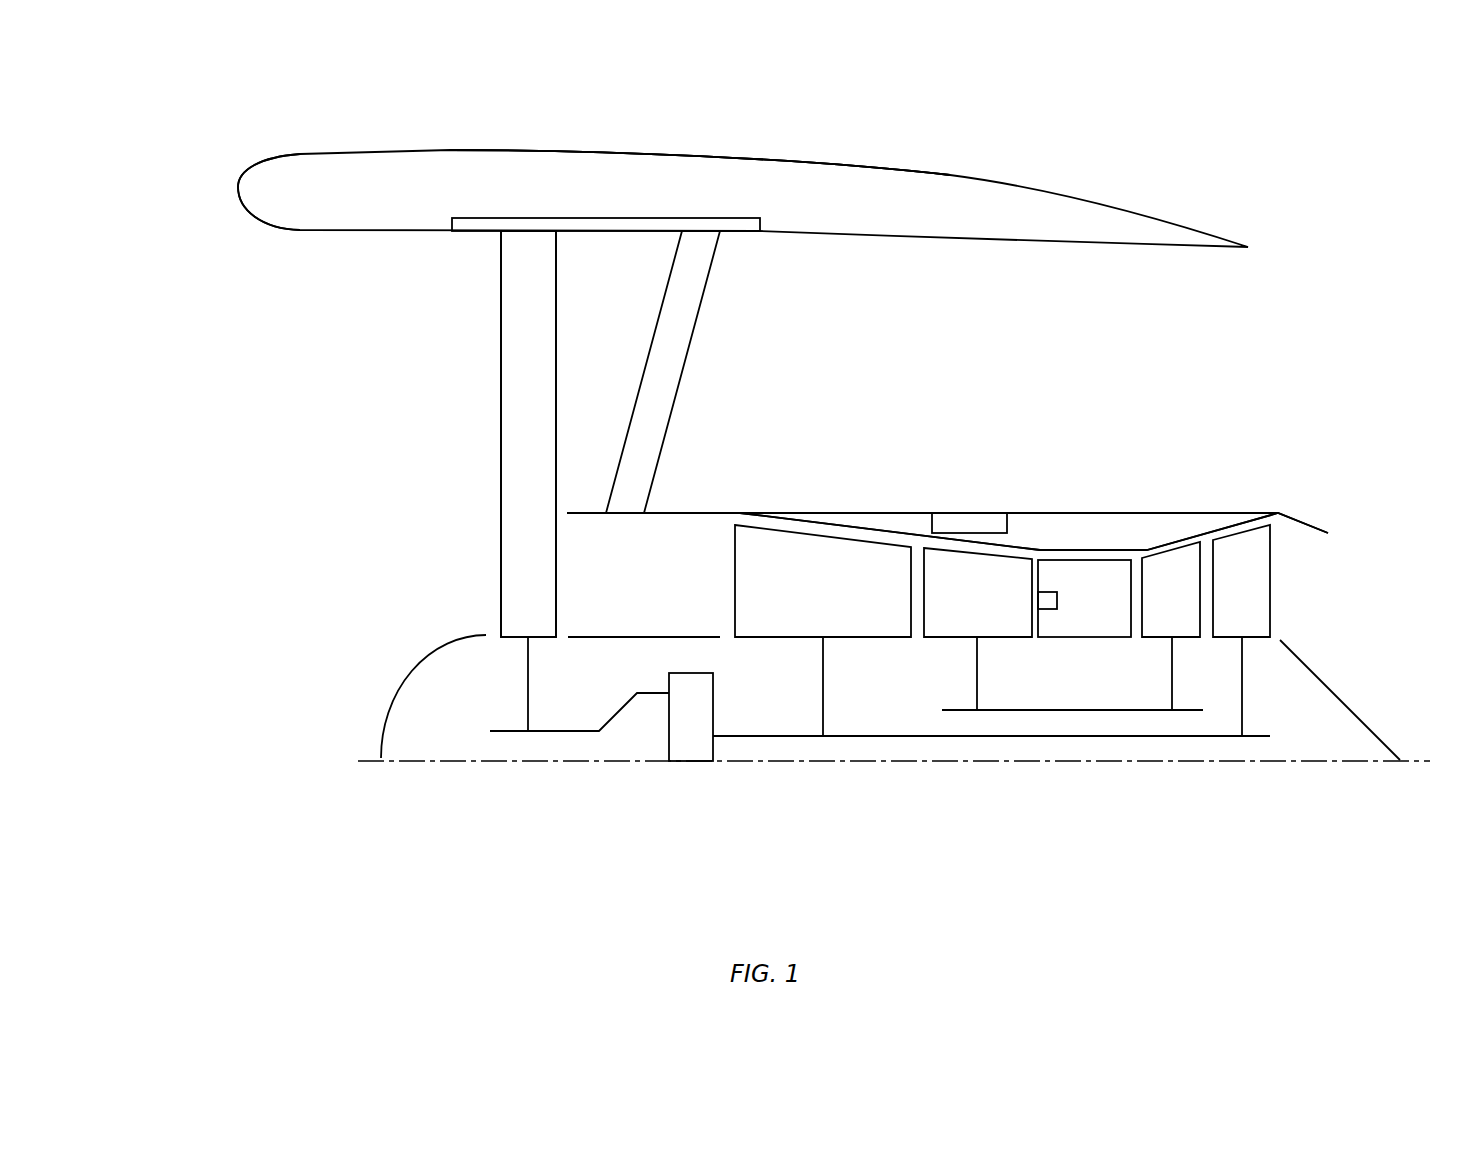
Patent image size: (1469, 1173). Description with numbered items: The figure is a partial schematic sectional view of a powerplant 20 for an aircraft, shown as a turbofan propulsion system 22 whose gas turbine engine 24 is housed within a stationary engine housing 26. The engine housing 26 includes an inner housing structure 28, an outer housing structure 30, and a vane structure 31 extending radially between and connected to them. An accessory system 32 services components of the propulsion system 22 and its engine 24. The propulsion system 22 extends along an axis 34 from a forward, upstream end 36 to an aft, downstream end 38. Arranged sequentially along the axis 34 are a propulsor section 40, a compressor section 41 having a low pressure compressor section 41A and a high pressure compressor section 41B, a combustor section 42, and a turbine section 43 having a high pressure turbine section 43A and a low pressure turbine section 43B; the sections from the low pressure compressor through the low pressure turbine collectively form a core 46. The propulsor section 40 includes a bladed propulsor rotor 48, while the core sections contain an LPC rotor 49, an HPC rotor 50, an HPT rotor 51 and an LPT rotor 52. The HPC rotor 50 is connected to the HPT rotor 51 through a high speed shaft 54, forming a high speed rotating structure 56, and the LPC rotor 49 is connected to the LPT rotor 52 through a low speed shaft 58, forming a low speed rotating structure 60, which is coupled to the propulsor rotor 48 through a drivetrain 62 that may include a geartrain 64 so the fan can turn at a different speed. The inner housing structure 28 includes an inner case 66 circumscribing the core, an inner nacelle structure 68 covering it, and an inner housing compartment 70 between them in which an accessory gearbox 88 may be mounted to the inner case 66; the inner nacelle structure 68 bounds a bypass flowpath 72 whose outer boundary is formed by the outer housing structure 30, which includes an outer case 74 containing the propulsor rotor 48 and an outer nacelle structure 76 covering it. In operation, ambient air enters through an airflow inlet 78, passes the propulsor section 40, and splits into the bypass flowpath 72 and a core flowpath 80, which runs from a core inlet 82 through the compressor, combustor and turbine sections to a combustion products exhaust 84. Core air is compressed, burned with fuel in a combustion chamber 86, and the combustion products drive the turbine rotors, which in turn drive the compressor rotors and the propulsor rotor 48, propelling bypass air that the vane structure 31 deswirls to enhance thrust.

The powerplant 20 is at (172, 93).
The propulsion system 22 is at (235, 122).
The gas turbine engine 24 is at (275, 752).
The engine housing 26 is at (393, 137).
The inner housing structure 28 is at (700, 507).
The outer housing structure 30 is at (462, 147).
The vane structure 31 is at (692, 327).
The accessory system 32 is at (923, 523).
The axis 34 is at (358, 761).
The forward, upstream end 36 is at (238, 190).
The aft, downstream end 38 is at (1400, 758).
The propulsor section 40 is at (472, 805).
The compressor section 41 is at (1040, 878).
The low pressure compressor section 41A is at (923, 803).
The high pressure compressor section 41B is at (1037, 803).
The combustor section 42 is at (1045, 803).
The turbine section 43 is at (1280, 878).
The high pressure turbine section 43A is at (1147, 803).
The low pressure turbine section 43B is at (1218, 803).
The core 46 is at (1025, 928).
The propulsor rotor 48 is at (514, 604).
The low pressure compressor rotor 49 is at (809, 604).
The high pressure compressor rotor 50 is at (963, 604).
The high pressure turbine rotor 51 is at (1158, 604).
The low pressure turbine rotor 52 is at (1228, 604).
The high speed shaft 54 is at (1025, 710).
The high speed rotating structure 56 is at (947, 690).
The low speed shaft 58 is at (840, 736).
The low speed rotating structure 60 is at (1268, 727).
The drivetrain 62 is at (687, 782).
The geartrain 64 is at (677, 729).
The inner case 66 is at (1230, 527).
The inner nacelle structure 68 is at (1200, 513).
The inner housing compartment 70 is at (1097, 533).
The bypass flowpath 72 is at (855, 379).
The outer case 74 is at (487, 218).
The outer nacelle structure 76 is at (552, 152).
The airflow inlet 78 is at (223, 463).
The core flowpath 80 is at (631, 604).
The core airflow inlet 82 is at (565, 568).
The combustion products exhaust 84 is at (1318, 598).
The combustion chamber 86 is at (1076, 604).
The accessory gearbox 88 is at (1007, 522).